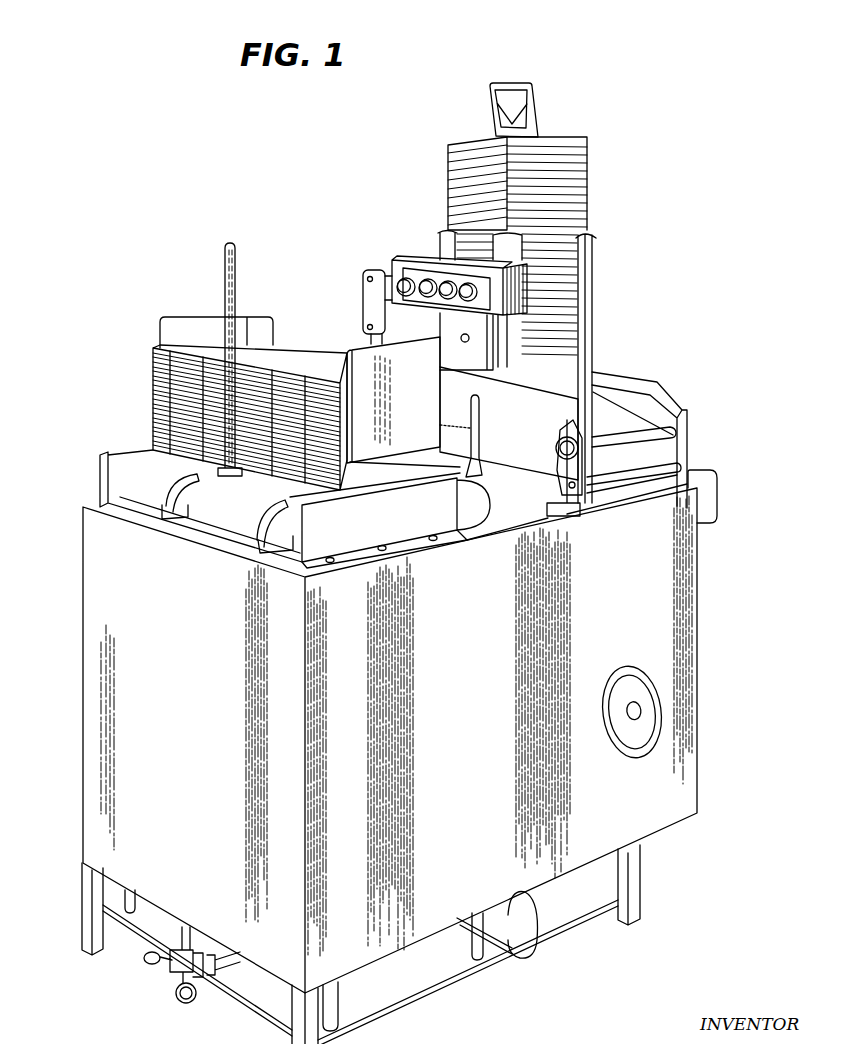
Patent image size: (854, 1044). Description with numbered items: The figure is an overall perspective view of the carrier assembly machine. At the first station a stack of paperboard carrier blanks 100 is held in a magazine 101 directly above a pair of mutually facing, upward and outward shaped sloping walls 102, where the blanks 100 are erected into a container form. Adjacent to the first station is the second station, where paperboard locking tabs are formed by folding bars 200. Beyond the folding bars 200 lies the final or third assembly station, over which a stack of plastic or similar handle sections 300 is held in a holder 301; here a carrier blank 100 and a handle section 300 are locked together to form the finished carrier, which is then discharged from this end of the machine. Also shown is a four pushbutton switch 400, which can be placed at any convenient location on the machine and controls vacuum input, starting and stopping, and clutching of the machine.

The carrier blanks 100 is at (310, 320).
The magazine 101 is at (165, 380).
The sloping walls 102 is at (197, 482).
The folding bars 200 is at (487, 490).
The handle sections 300 is at (587, 197).
The holder 301 is at (590, 318).
The four pushbutton switch 400 is at (413, 257).